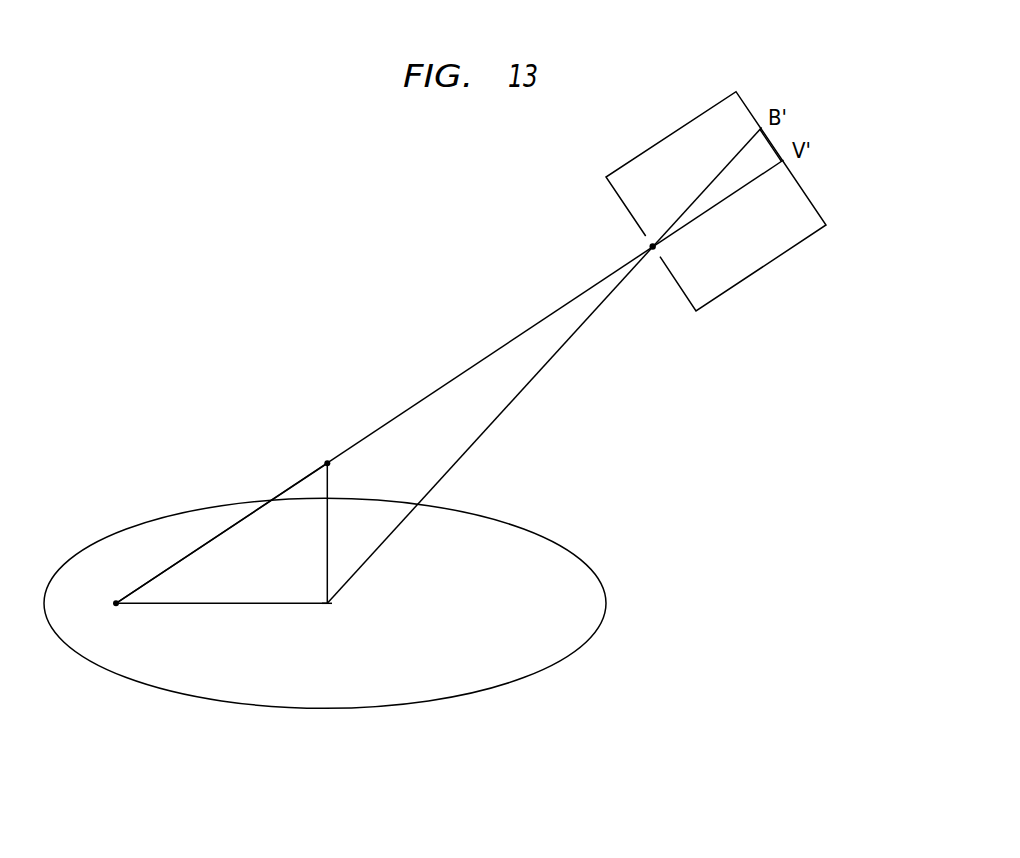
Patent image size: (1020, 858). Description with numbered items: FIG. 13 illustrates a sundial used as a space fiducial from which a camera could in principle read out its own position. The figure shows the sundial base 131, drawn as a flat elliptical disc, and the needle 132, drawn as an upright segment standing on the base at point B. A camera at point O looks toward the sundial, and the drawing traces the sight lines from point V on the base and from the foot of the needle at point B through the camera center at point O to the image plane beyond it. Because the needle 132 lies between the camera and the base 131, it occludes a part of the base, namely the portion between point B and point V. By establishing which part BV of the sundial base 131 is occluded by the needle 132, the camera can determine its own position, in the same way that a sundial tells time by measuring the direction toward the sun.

The sundial base 131 is at (596, 615).
The needle 132 is at (330, 498).
The point V is at (111, 617).
The point B is at (330, 619).
The point O is at (640, 240).